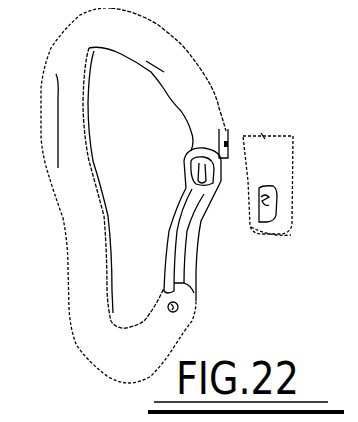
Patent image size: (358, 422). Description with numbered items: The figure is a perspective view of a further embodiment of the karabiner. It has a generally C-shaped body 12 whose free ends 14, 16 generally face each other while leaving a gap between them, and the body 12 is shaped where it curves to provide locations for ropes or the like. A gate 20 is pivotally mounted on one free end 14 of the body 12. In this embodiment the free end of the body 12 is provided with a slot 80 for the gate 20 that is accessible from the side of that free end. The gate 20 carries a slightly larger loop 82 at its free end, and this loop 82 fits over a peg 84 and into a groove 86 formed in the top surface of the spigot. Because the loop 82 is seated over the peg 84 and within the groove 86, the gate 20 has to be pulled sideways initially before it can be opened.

The body 12 is at (63, 155).
The free end 14 is at (176, 291).
The free end 16 is at (198, 115).
The gate 20 is at (192, 258).
The slot 80 is at (215, 134).
The loop 82 is at (178, 153).
The peg 84 is at (263, 218).
The groove 86 is at (265, 216).